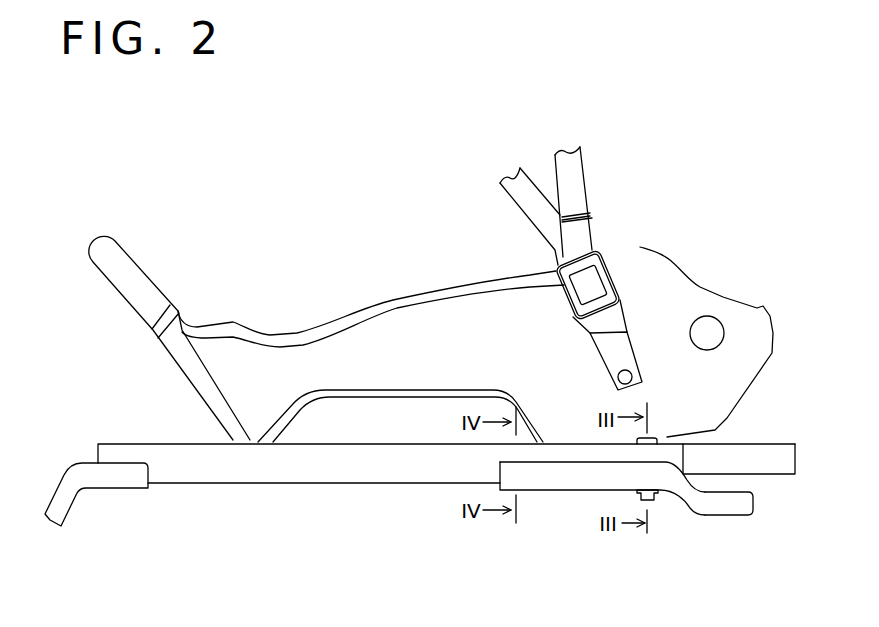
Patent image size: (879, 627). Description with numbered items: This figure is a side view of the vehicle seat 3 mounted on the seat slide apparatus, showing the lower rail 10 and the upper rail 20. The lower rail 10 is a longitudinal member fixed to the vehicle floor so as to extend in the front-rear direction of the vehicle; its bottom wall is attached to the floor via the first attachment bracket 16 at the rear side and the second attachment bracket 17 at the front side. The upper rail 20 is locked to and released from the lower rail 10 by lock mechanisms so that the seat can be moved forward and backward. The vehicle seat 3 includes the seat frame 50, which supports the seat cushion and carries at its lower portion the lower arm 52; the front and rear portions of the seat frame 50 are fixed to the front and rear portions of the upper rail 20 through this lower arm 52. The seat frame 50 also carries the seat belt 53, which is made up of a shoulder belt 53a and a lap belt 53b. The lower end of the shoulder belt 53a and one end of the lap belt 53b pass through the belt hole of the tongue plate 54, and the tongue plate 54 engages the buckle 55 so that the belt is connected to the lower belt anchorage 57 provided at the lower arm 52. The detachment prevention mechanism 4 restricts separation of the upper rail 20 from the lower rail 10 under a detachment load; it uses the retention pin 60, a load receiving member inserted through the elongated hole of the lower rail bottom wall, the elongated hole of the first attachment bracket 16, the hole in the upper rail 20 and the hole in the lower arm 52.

The vehicle seat 3 is at (140, 417).
The detachment prevention mechanism 4 is at (613, 497).
The lower rail 10 is at (283, 485).
The first attachment bracket 16 is at (730, 515).
The second attachment bracket 17 is at (93, 492).
The upper rail 20 is at (768, 443).
The seat frame 50 is at (325, 287).
The lower arm 52 is at (764, 311).
The seat belt 53 is at (458, 72).
The shoulder belt 53a is at (557, 163).
The lap belt 53b is at (512, 197).
The tongue plate 54 is at (590, 220).
The buckle 55 is at (603, 253).
The lower belt anchorage 57 is at (628, 332).
The retention pin 60 is at (650, 500).